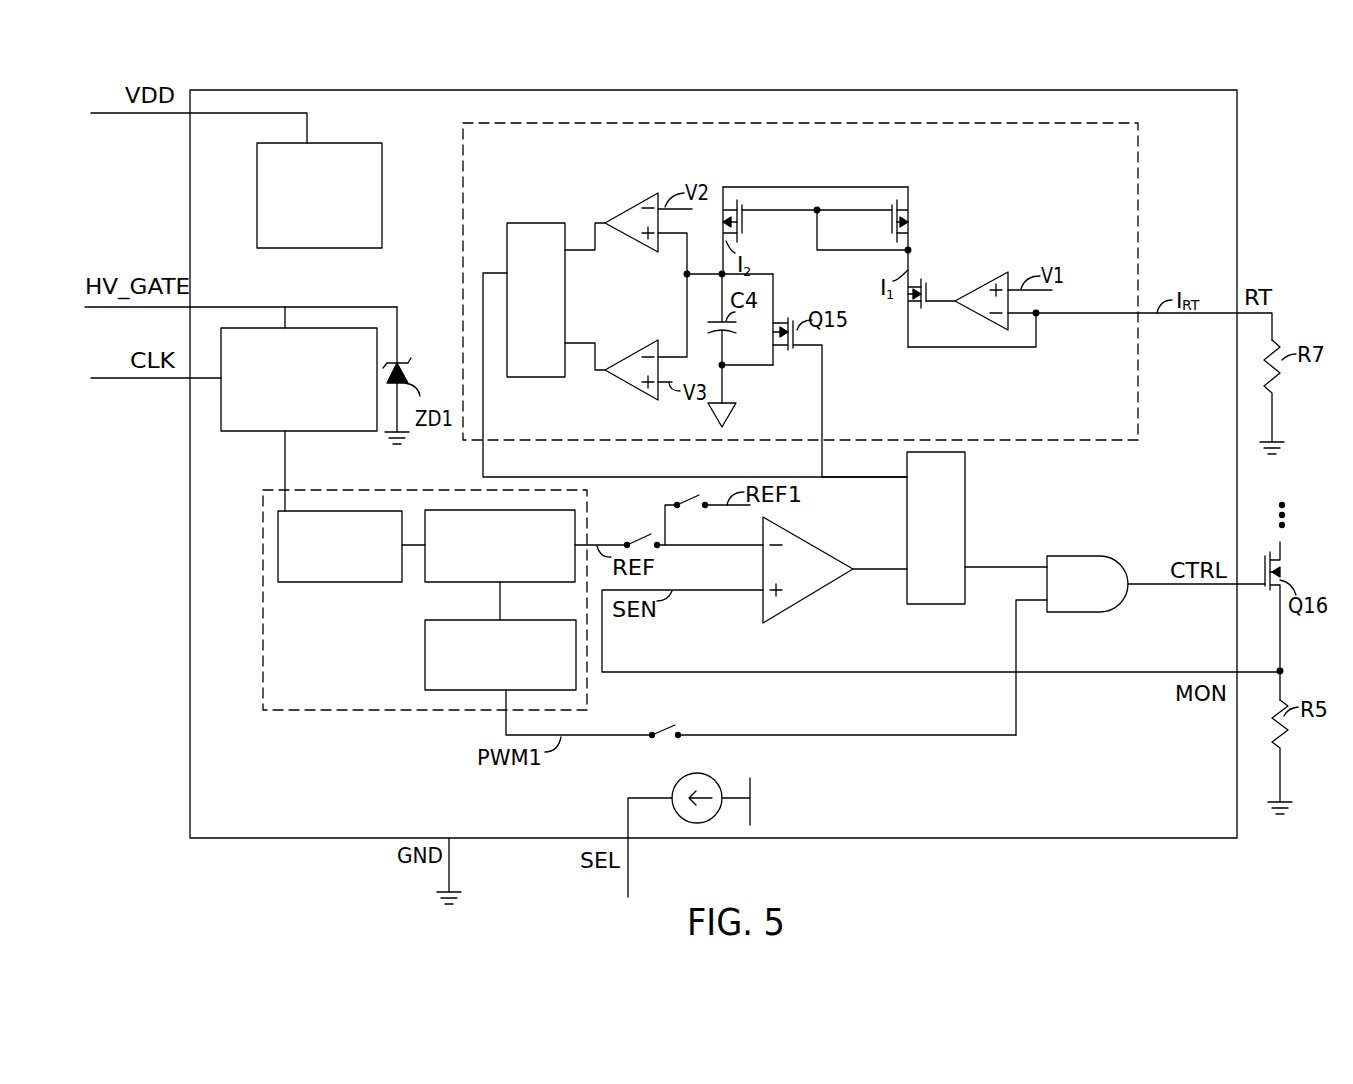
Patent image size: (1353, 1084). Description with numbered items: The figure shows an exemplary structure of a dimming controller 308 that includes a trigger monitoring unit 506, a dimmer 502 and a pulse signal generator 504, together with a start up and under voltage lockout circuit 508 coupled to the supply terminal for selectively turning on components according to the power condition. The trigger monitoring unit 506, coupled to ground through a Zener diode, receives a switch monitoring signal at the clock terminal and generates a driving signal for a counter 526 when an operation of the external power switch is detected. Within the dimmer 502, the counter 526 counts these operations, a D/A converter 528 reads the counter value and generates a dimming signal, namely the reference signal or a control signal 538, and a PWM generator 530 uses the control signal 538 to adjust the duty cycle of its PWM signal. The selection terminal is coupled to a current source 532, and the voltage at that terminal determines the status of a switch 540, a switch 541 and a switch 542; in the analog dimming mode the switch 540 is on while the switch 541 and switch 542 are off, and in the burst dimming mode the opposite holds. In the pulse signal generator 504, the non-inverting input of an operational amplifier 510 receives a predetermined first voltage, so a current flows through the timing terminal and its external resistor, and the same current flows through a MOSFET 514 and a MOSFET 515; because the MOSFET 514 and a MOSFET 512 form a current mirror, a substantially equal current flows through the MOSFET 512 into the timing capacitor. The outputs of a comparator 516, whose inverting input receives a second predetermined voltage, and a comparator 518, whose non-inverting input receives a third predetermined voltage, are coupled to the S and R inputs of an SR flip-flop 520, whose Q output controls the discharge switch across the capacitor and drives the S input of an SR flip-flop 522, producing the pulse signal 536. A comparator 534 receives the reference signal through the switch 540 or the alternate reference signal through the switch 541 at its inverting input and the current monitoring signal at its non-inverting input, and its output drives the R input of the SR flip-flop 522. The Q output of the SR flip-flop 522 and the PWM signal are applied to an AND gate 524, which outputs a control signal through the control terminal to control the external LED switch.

The dimming controller 308 is at (325, 90).
The start up and under voltage lockout (UVL) circuit 508 is at (331, 143).
The trigger monitoring unit 506 is at (316, 432).
The pulse signal generator 504 is at (1140, 176).
The SR flip-flop 520 is at (520, 223).
The comparator 516 is at (648, 251).
The comparator 518 is at (646, 395).
The MOSFET 512 is at (743, 228).
The MOSFET 514 is at (908, 216).
The MOSFET 515 is at (927, 283).
The operational amplifier 510 is at (972, 318).
The dimmer 502 is at (367, 711).
The counter 526 is at (340, 584).
The D/A converter 528 is at (440, 584).
The control signal 538 is at (500, 605).
The PWM generator 530 is at (425, 662).
The switch 540 is at (651, 535).
The switch 541 is at (688, 502).
The switch 542 is at (668, 728).
The comparator 534 is at (820, 548).
The pulse signal 536 is at (883, 478).
The SR flip-flop 522 is at (965, 505).
The AND gate 524 is at (1065, 556).
The current source 532 is at (697, 773).